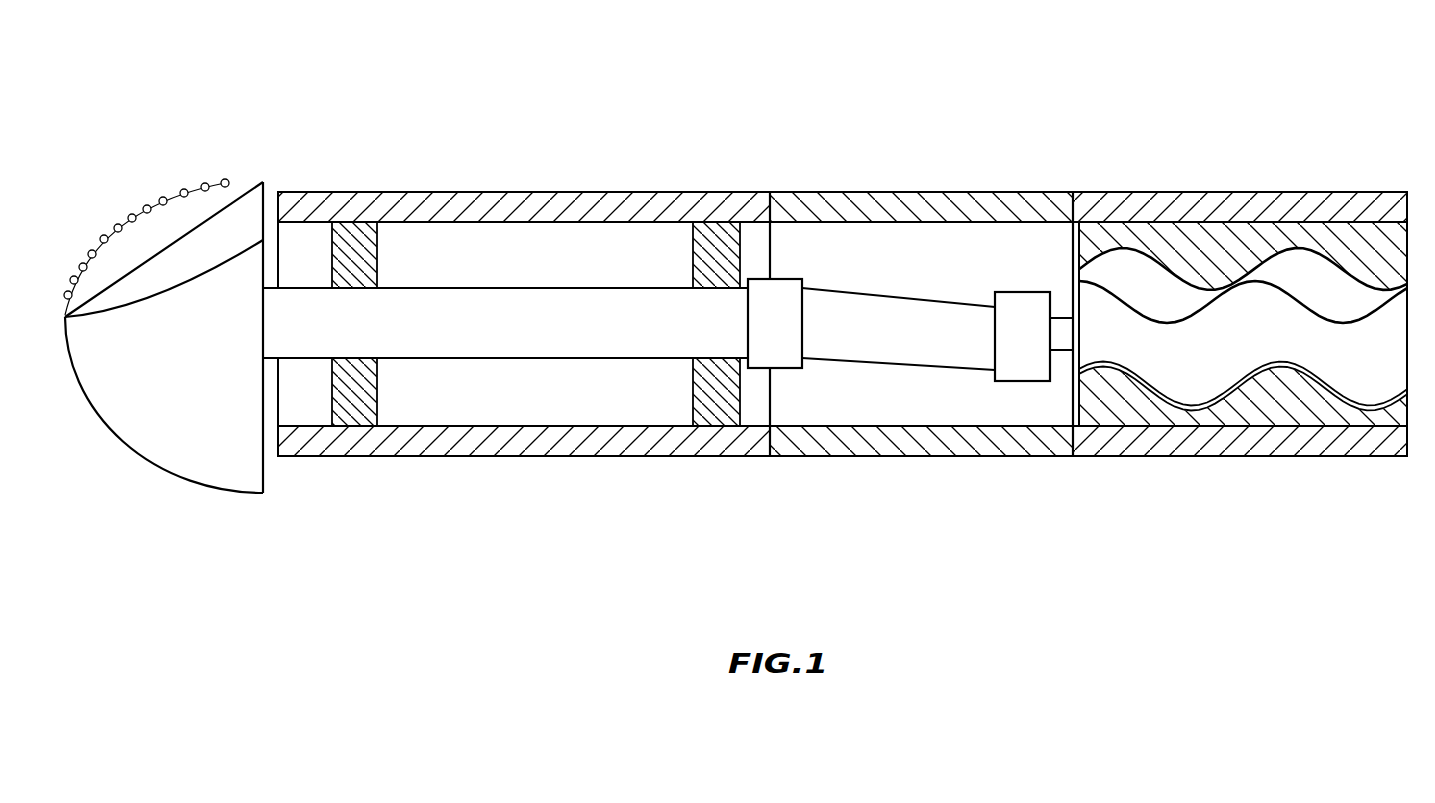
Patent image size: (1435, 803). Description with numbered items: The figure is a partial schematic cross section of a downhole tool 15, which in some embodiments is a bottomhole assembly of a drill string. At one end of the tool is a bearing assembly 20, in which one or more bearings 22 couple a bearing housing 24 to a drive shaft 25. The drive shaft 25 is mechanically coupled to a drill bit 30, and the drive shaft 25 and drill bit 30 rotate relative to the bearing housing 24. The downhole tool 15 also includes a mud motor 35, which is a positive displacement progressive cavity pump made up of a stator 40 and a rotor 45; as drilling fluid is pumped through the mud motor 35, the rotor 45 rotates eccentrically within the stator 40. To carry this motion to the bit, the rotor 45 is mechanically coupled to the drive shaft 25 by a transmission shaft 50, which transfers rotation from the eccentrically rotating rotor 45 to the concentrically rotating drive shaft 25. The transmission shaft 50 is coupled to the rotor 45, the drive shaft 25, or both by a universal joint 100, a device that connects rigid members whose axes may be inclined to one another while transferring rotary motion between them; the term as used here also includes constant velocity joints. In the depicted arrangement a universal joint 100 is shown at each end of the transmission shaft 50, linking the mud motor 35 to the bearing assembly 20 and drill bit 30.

The downhole tool 15 is at (397, 87).
The bearing assembly 20 is at (842, 281).
The bearings 22 is at (380, 245).
The bearing housing 24 is at (603, 200).
The drive shaft 25 is at (447, 345).
The drill bit 30 is at (190, 468).
The mud motor 35 is at (1127, 132).
The stator 40 is at (1132, 410).
The rotor 45 is at (1207, 383).
The transmission shaft 50 is at (868, 358).
The universal joint 100 is at (785, 368).